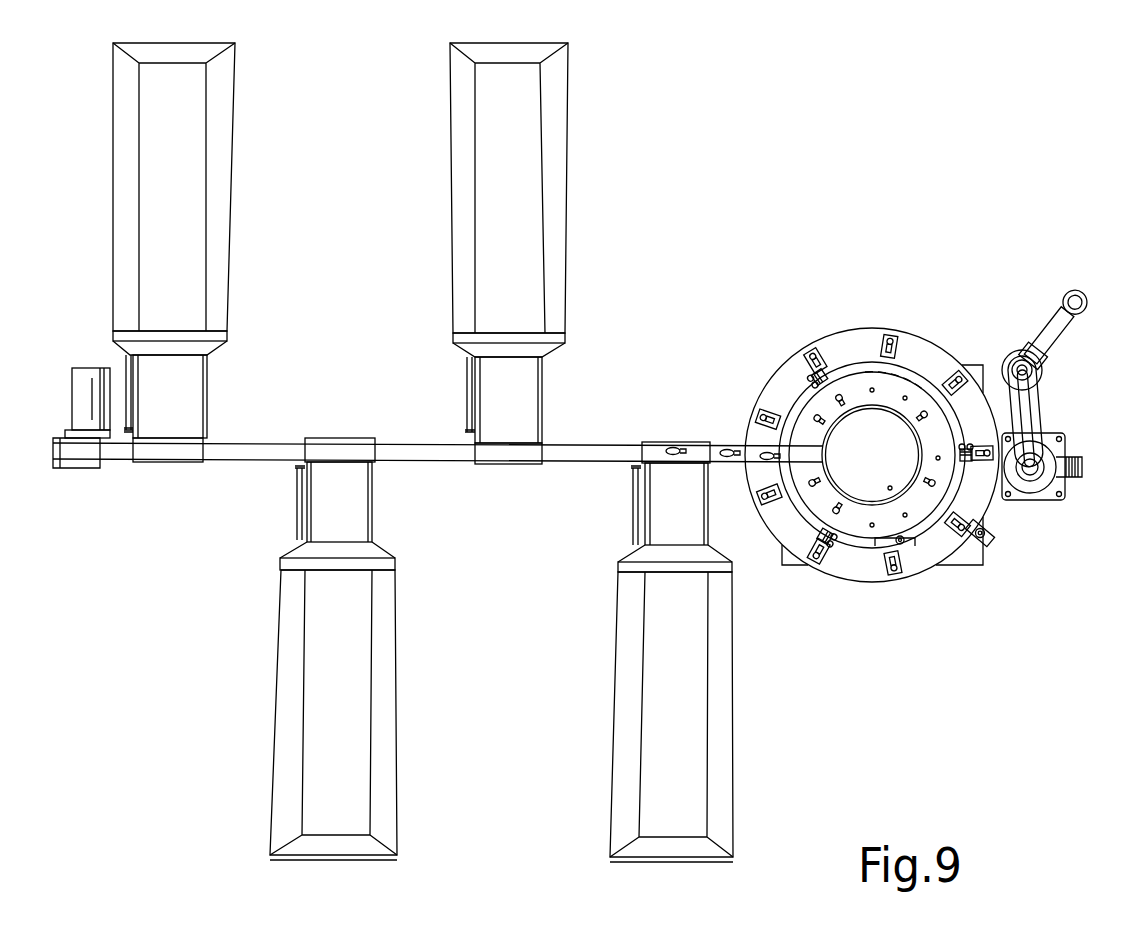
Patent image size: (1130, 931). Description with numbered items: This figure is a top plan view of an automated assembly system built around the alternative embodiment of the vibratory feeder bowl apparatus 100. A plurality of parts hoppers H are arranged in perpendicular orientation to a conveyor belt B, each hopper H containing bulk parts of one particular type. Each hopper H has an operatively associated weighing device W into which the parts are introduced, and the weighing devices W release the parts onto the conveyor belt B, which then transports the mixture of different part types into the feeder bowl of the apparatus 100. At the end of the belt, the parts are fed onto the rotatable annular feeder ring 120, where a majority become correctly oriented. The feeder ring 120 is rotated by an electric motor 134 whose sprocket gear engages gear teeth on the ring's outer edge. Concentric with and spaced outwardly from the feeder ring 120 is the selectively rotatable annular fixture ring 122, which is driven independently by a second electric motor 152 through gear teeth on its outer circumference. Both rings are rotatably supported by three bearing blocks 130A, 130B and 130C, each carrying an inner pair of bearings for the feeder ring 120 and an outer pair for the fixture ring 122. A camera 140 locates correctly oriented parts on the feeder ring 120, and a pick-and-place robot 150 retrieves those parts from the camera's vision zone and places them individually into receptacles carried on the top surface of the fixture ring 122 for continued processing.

The vibratory feeder bowl 100 is at (830, 300).
The annular feeder ring 120 is at (815, 500).
The annular fixture ring 122 is at (777, 522).
The bearing block 130A is at (968, 465).
The bearing block 130B is at (848, 545).
The bearing block 130C is at (822, 378).
The electric motor 134 is at (900, 545).
The camera 140 is at (908, 365).
The pick-and-place robot 150 is at (1082, 292).
The electric motor 152 is at (987, 538).
The conveyor belt B is at (577, 452).
The parts hopper H is at (182, 267).
The weighing device W is at (178, 413).